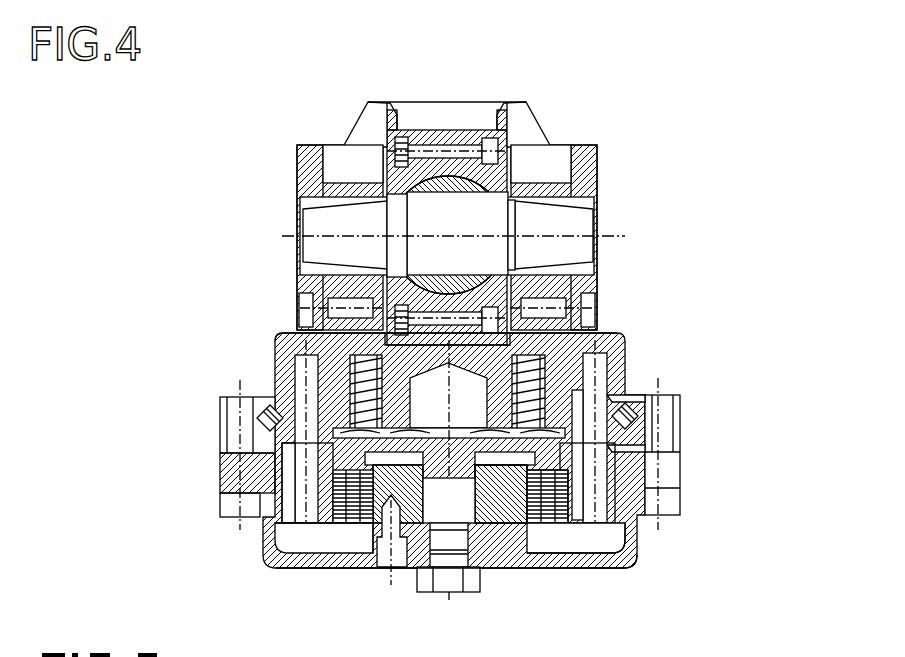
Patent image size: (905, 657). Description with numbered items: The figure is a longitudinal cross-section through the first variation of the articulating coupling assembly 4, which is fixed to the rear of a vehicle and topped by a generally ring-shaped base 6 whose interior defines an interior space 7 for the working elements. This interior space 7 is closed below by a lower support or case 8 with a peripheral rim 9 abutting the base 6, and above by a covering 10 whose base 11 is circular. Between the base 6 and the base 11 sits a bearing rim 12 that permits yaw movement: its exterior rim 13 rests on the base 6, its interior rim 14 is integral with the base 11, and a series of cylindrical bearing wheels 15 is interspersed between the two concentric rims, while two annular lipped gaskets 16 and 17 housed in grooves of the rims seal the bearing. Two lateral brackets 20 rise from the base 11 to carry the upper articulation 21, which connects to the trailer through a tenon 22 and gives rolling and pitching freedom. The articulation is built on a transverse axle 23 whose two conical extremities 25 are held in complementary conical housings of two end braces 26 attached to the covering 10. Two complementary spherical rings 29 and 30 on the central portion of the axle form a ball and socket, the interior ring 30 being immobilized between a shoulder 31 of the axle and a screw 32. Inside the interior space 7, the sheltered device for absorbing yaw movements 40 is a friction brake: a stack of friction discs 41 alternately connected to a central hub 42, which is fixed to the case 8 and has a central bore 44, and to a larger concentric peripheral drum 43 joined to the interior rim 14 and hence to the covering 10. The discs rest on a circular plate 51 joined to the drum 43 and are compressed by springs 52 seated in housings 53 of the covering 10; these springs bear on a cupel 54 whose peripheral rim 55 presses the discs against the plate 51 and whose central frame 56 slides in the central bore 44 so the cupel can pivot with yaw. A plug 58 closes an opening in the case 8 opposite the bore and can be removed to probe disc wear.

The articulating coupling assembly 4 is at (795, 313).
The base 6 is at (217, 472).
The interior space 7 is at (345, 535).
The lower support or case 8 is at (307, 577).
The peripheral rim 9 is at (305, 490).
The covering 10 is at (632, 333).
The base of covering 11 is at (300, 352).
The bearing rim 12 is at (684, 408).
The exterior rim 13 is at (220, 417).
The interior rim 14 is at (271, 390).
The cylindrical bearing wheels 15 is at (637, 400).
The annular lipped gasket 16 is at (622, 450).
The annular lipped gasket 17 is at (622, 388).
The lateral brackets 20 is at (345, 150).
The upper articulation 21 is at (630, 236).
The tenon 22 is at (507, 93).
The transverse axle 23 is at (527, 135).
The conical extremities 25 is at (327, 228).
The end braces 26 is at (297, 180).
The spherical ring 29 is at (462, 224).
The interior ring 30 is at (347, 165).
The shoulder 31 is at (393, 249).
The screw 32 is at (560, 300).
The device for absorbing yaw movements 40 is at (600, 553).
The friction discs 41 is at (550, 488).
The central hub 42 is at (490, 513).
The peripheral drum 43 is at (290, 515).
The central bore 44 is at (462, 505).
The circular plate 51 is at (547, 522).
The springs 52 is at (527, 392).
The housings 53 is at (340, 377).
The cupel 54 is at (403, 445).
The peripheral rim 55 is at (325, 455).
The central frame 56 is at (410, 525).
The plug 58 is at (455, 595).